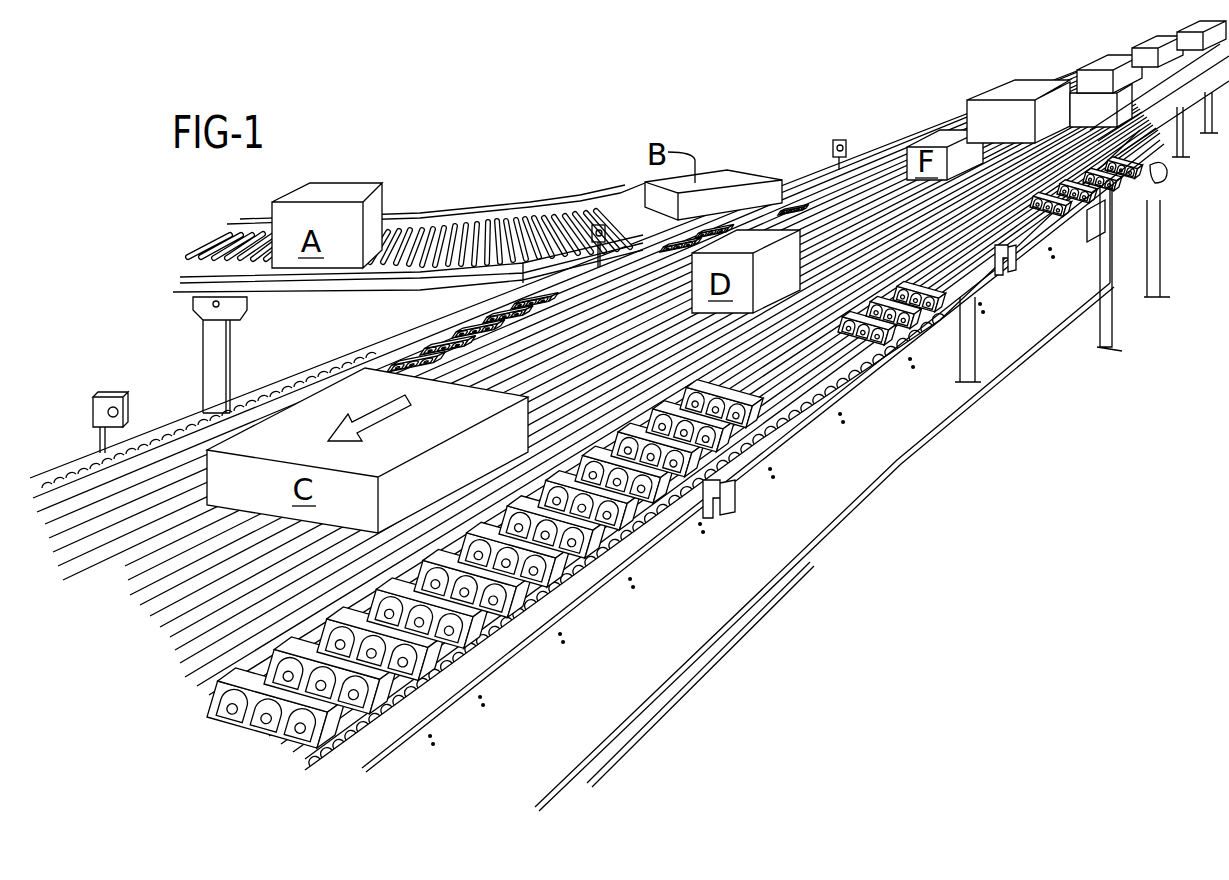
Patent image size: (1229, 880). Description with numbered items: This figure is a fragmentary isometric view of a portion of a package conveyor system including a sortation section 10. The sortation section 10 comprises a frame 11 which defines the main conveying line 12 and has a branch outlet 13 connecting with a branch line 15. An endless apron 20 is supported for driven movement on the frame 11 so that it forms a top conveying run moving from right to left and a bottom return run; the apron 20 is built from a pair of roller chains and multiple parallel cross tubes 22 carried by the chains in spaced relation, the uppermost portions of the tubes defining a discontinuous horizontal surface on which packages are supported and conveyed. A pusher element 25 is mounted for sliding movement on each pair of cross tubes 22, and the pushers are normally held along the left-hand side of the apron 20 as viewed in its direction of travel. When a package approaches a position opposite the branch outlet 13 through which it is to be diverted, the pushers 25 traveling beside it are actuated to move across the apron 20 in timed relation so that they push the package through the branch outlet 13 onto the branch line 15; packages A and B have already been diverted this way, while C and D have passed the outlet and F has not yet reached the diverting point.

The sortation section 10 is at (743, 168).
The frame 11 is at (956, 411).
The main conveying line 12 is at (360, 341).
The branch outlet 13 is at (806, 172).
The branch line 15 is at (469, 205).
The endless apron 20 is at (119, 634).
The cross tubes 22 is at (783, 418).
The pusher element 25 is at (458, 627).